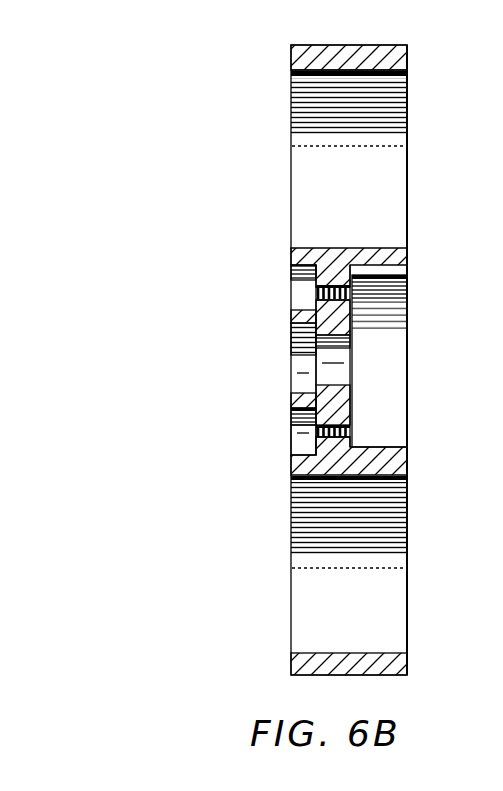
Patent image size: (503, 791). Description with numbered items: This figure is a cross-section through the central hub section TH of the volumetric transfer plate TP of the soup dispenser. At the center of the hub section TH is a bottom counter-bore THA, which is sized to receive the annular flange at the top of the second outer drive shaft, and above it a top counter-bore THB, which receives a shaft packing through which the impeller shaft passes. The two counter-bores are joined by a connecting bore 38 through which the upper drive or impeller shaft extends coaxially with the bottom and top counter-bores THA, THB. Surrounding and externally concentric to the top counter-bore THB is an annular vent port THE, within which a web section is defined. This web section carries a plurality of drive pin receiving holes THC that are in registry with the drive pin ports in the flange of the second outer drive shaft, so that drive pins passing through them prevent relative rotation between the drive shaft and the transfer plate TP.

The volumetric transfer plate TP is at (493, 161).
The hub section TH is at (385, 246).
The bottom counter-bore THA is at (384, 279).
The top counter-bore THB is at (301, 403).
The drive pin receiving holes THC is at (335, 289).
The annular vent port THE is at (299, 446).
The connecting bore 38 is at (340, 386).